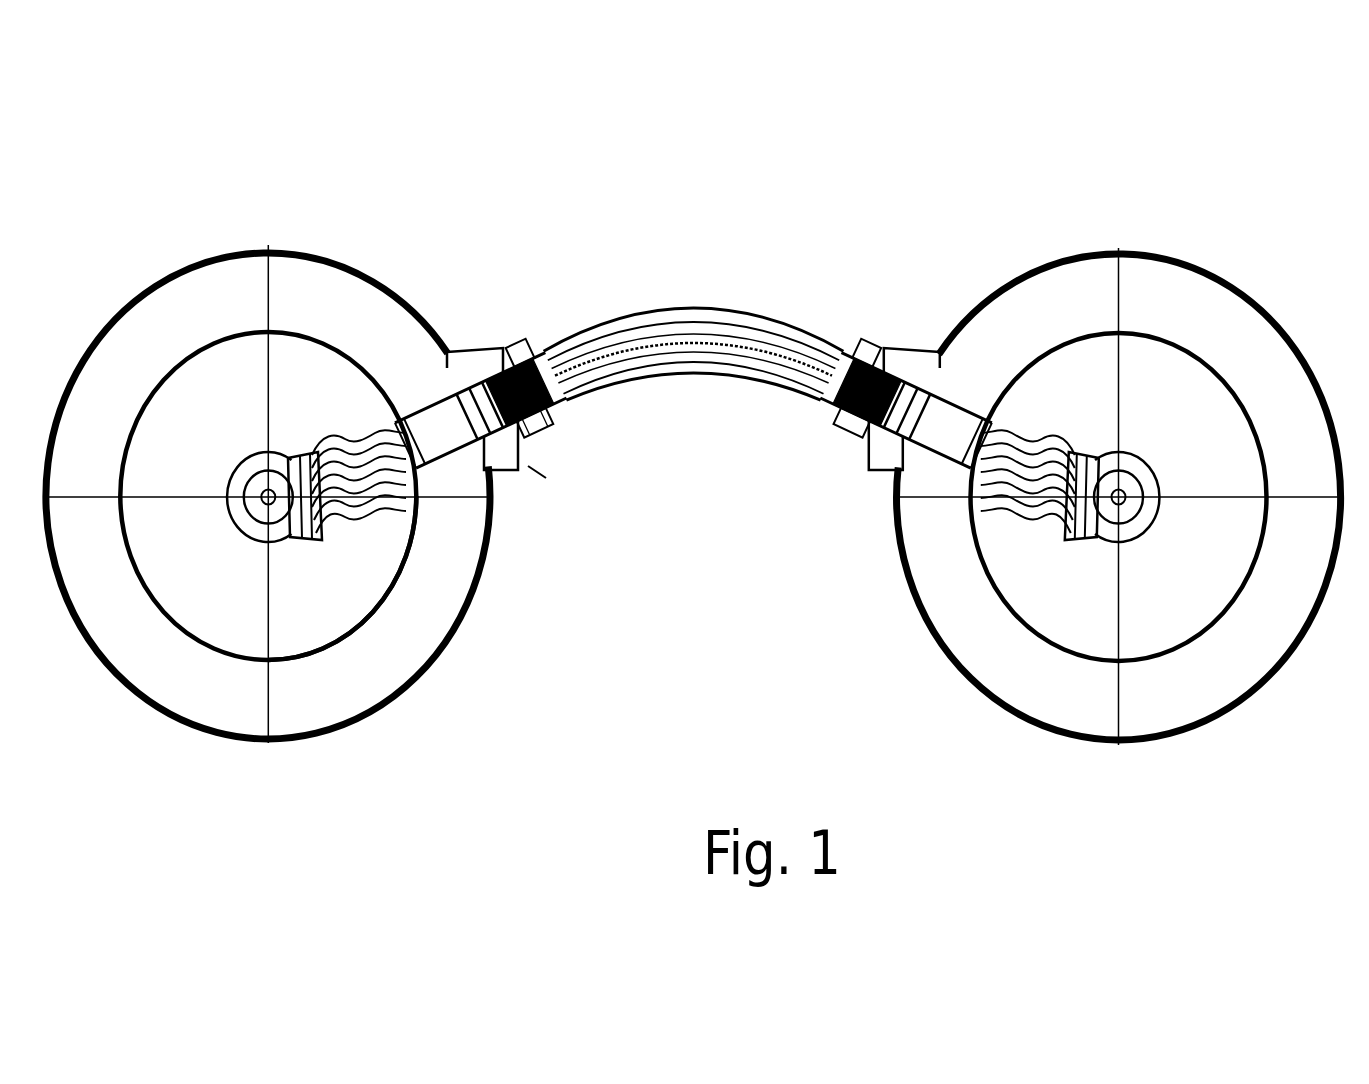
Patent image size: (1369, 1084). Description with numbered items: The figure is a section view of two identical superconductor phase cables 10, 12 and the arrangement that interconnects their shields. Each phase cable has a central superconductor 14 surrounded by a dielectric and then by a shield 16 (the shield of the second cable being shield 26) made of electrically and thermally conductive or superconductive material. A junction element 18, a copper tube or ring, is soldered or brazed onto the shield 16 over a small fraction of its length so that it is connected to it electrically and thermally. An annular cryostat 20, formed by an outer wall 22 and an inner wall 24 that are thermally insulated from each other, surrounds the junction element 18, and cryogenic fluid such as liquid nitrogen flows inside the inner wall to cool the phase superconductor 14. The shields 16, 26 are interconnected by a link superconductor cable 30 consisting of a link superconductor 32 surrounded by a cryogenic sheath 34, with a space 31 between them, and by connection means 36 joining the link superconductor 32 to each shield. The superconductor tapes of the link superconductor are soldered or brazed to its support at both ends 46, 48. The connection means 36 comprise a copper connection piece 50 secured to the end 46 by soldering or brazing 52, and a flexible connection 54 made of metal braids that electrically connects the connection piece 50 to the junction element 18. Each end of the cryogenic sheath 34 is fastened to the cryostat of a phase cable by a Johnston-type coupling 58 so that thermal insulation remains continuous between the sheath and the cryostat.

The phase cable 10 is at (287, 222).
The phase cable 12 is at (1107, 226).
The central superconductor 14 is at (244, 461).
The shield 16 is at (263, 545).
The junction element 18 is at (229, 482).
The cryostat 20 is at (178, 660).
The outer wall 22 is at (423, 679).
The inner wall 24 is at (410, 548).
The shield 26 is at (1132, 522).
The link superconductor cable 30 is at (667, 292).
The space 31 is at (571, 345).
The link superconductor 32 is at (818, 422).
The cryogenic sheath 34 is at (767, 326).
The connection means 36 is at (514, 308).
The end 46 is at (557, 423).
The end 48 is at (883, 372).
The connection piece 50 is at (447, 427).
The soldering or brazing 52 is at (473, 392).
The flexible connection 54 is at (352, 432).
The coupling 58 is at (530, 470).